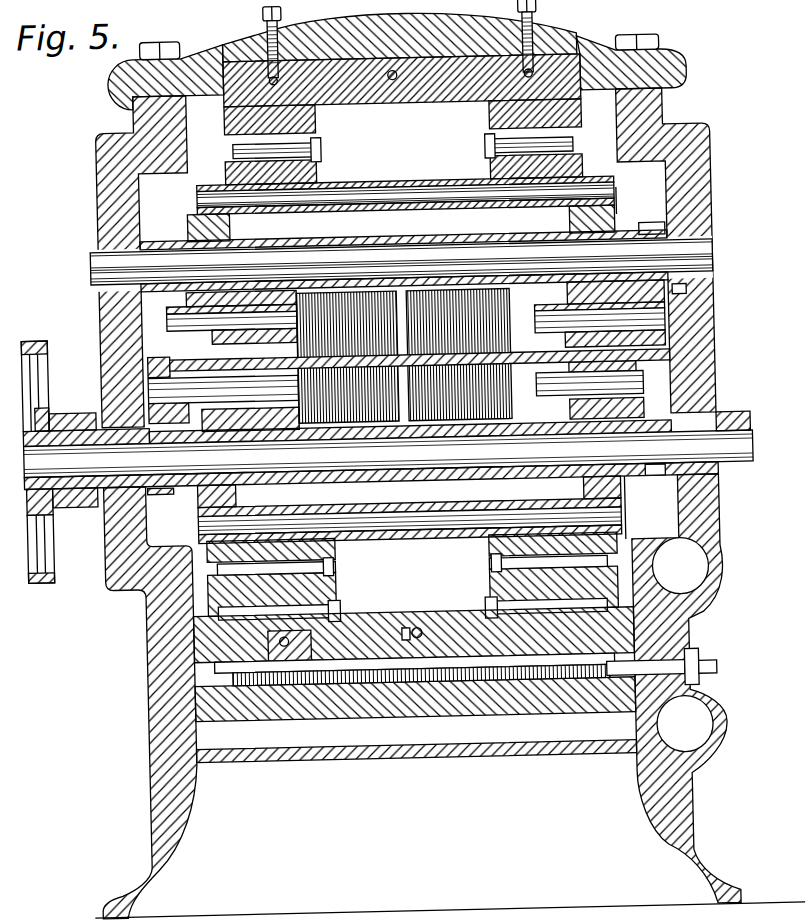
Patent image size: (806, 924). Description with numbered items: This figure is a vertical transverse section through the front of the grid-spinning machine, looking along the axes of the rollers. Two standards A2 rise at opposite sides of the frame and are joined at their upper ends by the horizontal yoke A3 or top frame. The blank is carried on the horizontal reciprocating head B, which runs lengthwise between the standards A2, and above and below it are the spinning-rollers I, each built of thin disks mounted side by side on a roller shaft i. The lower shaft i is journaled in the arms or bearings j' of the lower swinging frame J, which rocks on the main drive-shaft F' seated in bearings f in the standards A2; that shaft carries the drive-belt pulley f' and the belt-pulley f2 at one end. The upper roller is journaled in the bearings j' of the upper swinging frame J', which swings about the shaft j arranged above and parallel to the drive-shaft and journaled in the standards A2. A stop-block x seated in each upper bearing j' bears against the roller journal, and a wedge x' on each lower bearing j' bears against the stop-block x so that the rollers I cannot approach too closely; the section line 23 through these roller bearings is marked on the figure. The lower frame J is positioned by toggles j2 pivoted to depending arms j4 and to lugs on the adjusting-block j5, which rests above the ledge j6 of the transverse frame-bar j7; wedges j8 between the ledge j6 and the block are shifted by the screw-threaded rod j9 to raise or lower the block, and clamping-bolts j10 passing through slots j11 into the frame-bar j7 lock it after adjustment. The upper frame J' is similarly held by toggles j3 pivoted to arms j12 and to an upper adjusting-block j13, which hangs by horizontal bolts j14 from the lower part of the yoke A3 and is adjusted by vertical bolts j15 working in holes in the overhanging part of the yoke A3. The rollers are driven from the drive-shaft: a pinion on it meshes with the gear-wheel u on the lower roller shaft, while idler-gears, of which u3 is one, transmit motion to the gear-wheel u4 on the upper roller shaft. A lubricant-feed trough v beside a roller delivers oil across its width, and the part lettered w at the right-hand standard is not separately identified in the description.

The standards A2 is at (729, 339).
The yoke A3 is at (206, 38).
The vertical bolts j15 is at (288, 21).
The adjusting-block j13 is at (449, 88).
The horizontal bolts j14 is at (402, 81).
The upper toggles j3 is at (592, 149).
The arms j12 is at (242, 171).
The upper swinging frame J' is at (401, 212).
The section line 23 is at (630, 363).
The idler-gear u3 is at (651, 216).
The shaft j is at (401, 261).
The arms or bearings j' is at (406, 353).
The stop-block x is at (416, 342).
The roller shaft i is at (601, 350).
The wedge x' is at (396, 383).
The reciprocating head B is at (250, 402).
The spinning-rollers I is at (412, 355).
The gear-wheel u is at (162, 359).
The gear-wheel u4 is at (700, 296).
The main shaft F' is at (402, 451).
The bearings f is at (389, 468).
The belt-pulley f2 is at (58, 386).
The drive-belt pulley f' is at (41, 563).
The lubricant-feed trough v is at (160, 489).
The lower swinging frame J is at (409, 509).
The nut pocket w is at (655, 483).
The depending arms j4 is at (312, 546).
The lower toggles j2 is at (415, 586).
The adjusting-block j5 is at (436, 623).
The slots j11 is at (413, 627).
The clamping-bolts j10 is at (402, 633).
The ledge j6 is at (391, 690).
The transverse frame-bar j7 is at (416, 734).
The wedges j8 is at (286, 696).
The screw-threaded rod j9 is at (350, 697).